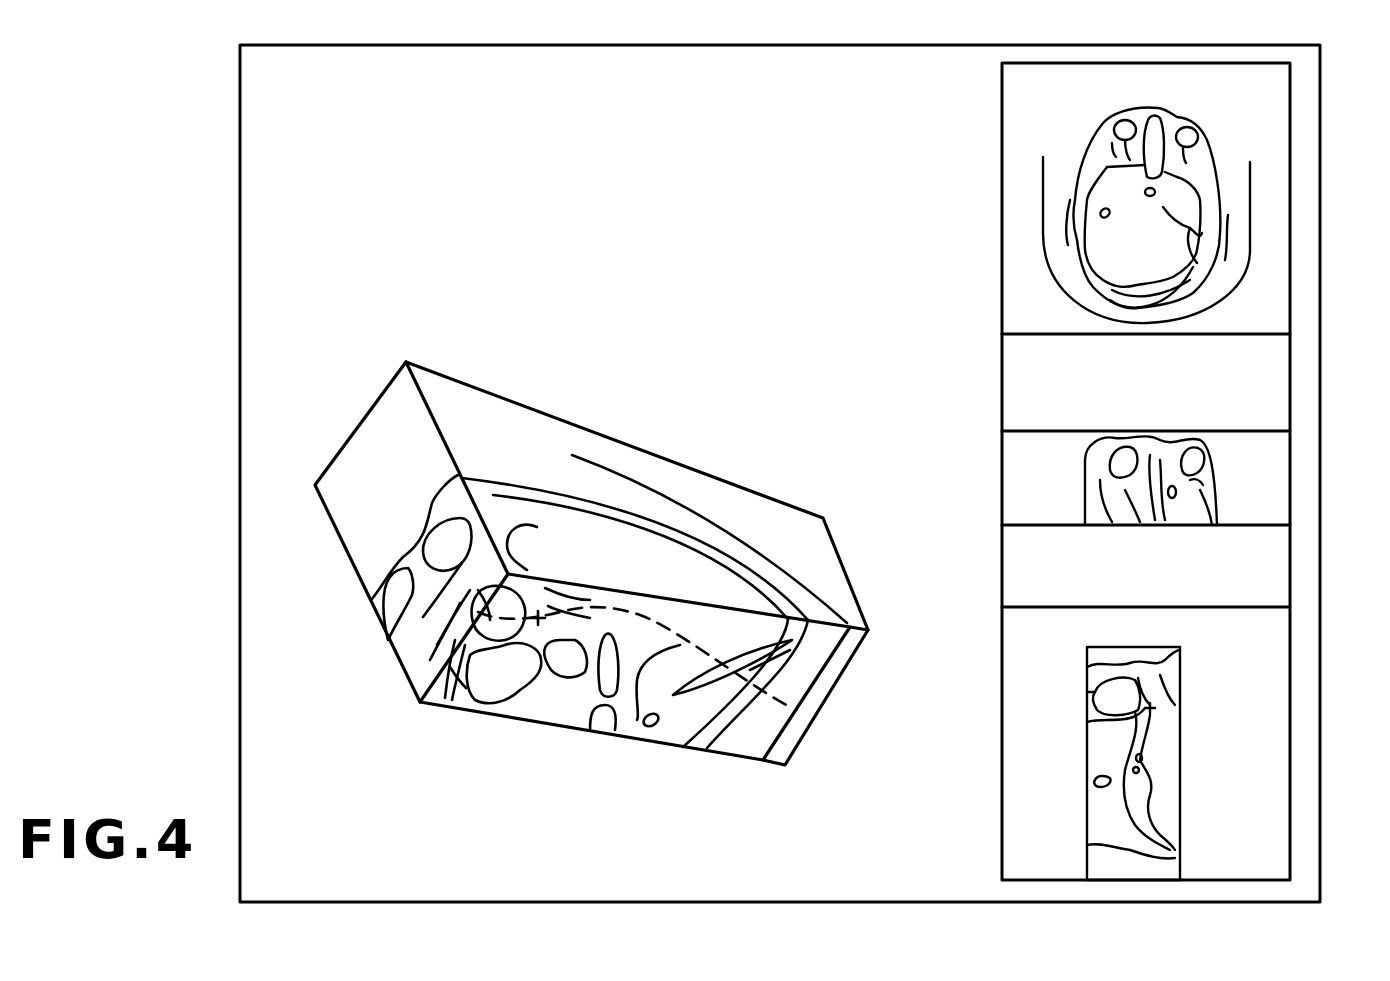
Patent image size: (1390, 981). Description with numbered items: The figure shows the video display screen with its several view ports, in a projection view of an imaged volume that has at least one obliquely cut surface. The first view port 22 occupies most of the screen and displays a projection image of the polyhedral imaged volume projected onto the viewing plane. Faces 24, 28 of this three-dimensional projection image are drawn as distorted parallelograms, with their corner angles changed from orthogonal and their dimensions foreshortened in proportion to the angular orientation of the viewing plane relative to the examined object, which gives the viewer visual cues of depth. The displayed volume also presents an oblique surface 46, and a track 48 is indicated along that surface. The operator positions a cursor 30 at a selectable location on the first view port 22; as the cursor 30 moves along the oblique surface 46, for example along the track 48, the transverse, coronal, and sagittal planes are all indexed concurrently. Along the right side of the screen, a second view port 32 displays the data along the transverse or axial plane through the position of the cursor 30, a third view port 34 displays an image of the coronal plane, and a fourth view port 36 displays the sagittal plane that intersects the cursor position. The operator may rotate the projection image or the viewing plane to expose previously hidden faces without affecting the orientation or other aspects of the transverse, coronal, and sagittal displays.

The first view port 22 is at (531, 839).
The face of the 3D projection image 24 is at (360, 525).
The face of the 3D projection image 28 is at (771, 512).
The cursor 30 is at (542, 614).
The oblique surface 46 is at (747, 742).
The track 48 is at (788, 707).
The second view port 32 is at (1263, 203).
The third view port 34 is at (1245, 413).
The fourth view port 36 is at (1250, 670).